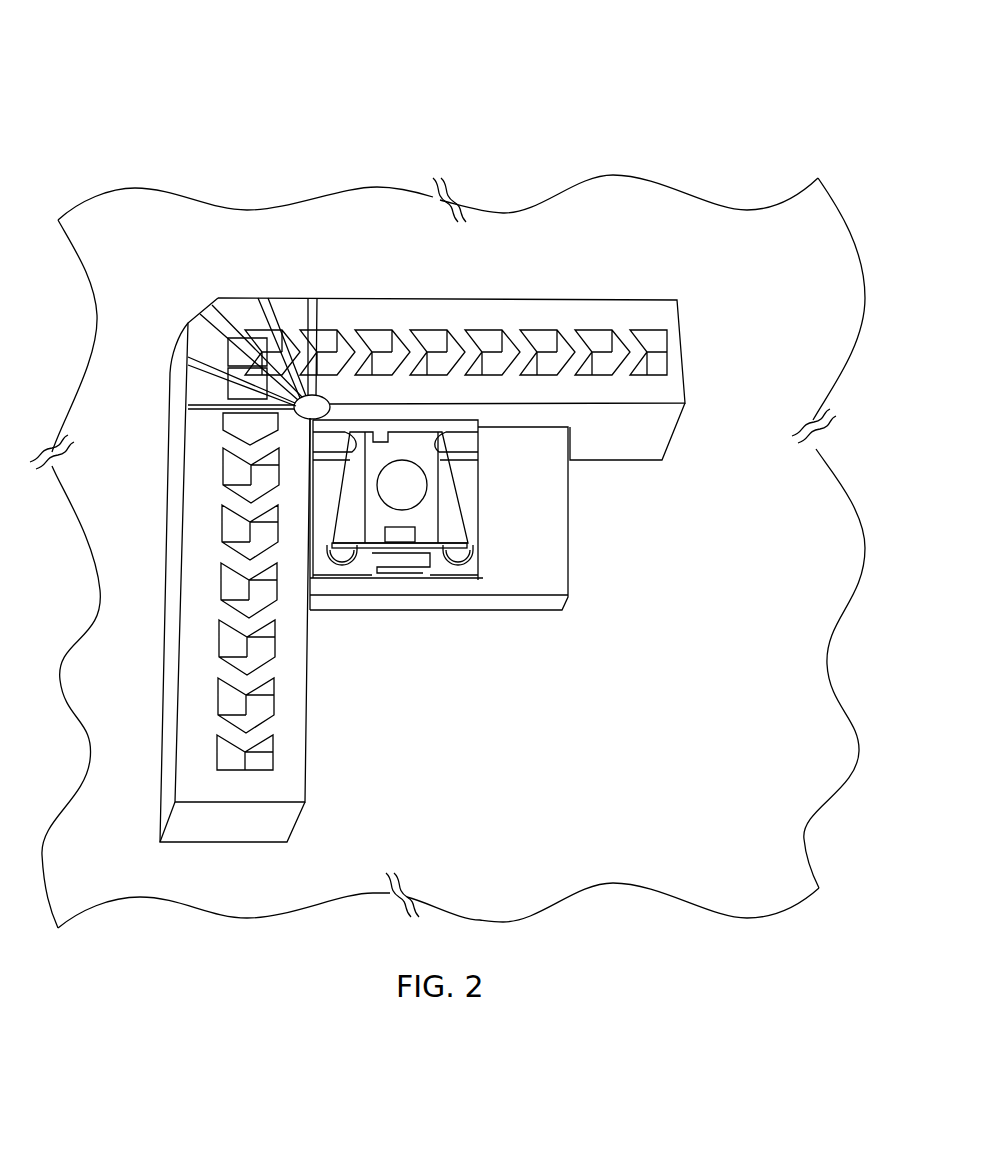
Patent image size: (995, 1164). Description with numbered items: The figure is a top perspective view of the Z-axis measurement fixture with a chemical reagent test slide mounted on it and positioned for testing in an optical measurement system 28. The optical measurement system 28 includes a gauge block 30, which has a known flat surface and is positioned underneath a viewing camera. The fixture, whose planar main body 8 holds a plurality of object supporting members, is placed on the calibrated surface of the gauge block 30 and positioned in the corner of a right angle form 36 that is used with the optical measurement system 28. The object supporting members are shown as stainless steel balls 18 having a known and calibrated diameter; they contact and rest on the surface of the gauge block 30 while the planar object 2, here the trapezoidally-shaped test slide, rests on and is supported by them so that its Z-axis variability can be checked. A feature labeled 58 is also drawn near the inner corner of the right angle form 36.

The optical measurement system 28 is at (642, 158).
The right angle form 36 is at (676, 386).
The hub 58 is at (318, 400).
The gauge block 30 is at (534, 502).
The planar object 2 is at (399, 485).
The planar main body 8 is at (474, 518).
The stainless steel balls 18 is at (474, 557).